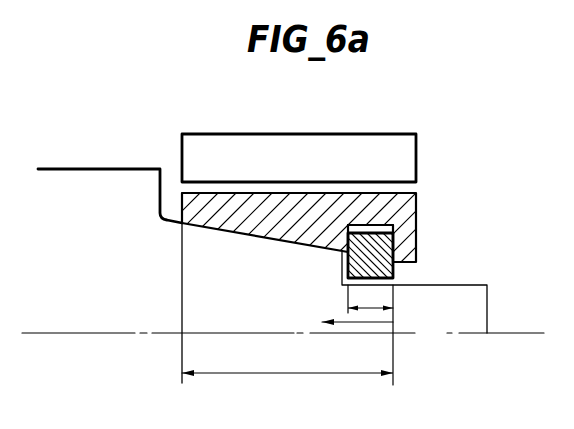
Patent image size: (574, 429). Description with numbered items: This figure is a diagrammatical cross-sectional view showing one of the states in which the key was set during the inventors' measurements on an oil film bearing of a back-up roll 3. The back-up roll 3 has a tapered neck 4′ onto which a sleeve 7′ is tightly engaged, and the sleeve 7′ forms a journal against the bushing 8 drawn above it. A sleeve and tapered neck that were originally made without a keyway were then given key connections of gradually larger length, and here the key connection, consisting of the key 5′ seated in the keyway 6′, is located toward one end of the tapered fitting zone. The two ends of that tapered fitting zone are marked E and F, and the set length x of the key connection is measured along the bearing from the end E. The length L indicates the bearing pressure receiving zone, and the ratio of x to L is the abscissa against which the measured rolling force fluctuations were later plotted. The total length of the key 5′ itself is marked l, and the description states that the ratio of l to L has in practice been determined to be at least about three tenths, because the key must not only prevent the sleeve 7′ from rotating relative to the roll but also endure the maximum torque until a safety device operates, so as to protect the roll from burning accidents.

The back-up roll 3 is at (100, 177).
The bushing 8 is at (382, 147).
The sleeve 7′ is at (418, 203).
The keyway 6′ is at (395, 233).
The key 5′ is at (356, 254).
The tapered neck 4′ is at (195, 306).
The end of the tapered fitting zone E is at (397, 279).
The end of the tapered fitting zone F is at (182, 224).
The length of the bearing pressure receiving zone L is at (287, 345).
The total length of the key l is at (370, 299).
The set length of the key connection x is at (346, 320).